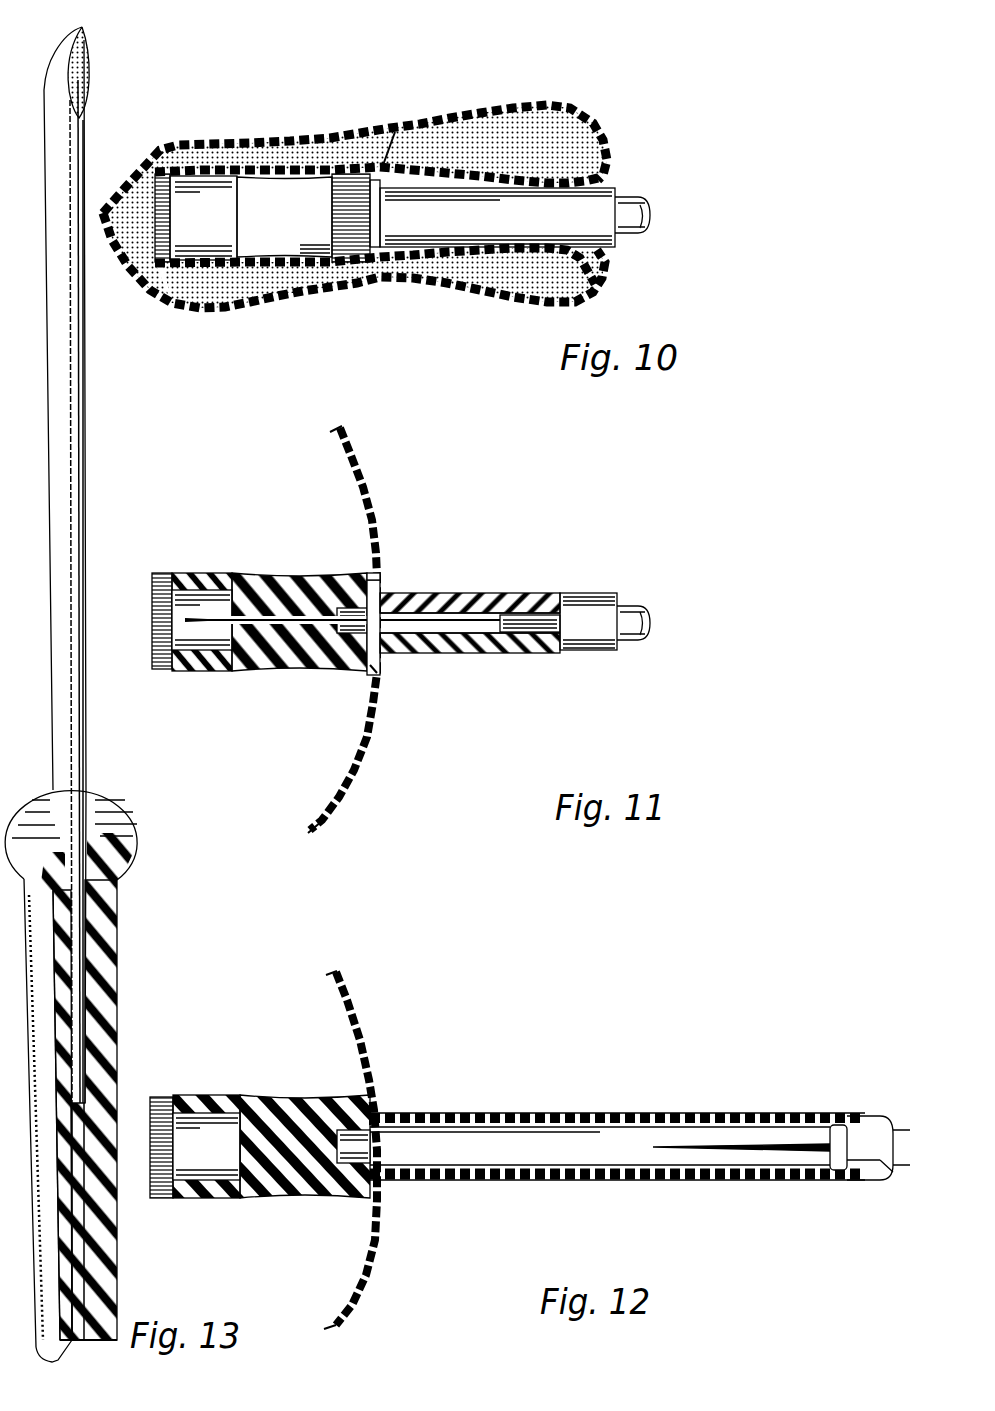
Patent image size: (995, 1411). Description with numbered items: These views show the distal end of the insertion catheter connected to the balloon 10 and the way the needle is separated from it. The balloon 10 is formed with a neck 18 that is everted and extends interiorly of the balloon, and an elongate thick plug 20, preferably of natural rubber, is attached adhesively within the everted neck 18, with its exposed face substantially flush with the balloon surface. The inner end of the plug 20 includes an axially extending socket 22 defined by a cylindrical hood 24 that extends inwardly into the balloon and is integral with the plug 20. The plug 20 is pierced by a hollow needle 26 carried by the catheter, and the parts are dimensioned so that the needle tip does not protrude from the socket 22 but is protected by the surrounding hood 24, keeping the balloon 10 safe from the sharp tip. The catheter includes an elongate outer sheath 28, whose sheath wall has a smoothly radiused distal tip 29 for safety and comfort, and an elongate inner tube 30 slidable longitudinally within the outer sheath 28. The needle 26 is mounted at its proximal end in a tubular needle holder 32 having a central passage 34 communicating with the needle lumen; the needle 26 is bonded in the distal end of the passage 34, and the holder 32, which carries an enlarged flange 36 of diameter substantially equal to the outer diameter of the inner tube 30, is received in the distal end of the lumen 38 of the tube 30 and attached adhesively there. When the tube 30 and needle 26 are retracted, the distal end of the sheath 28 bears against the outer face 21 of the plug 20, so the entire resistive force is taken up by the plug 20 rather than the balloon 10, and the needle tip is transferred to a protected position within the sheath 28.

In FIG. 10, the balloon 10 is at (332, 128).
In FIG. 11, the balloon 10 is at (380, 500).
In FIG. 12, the balloon 10 is at (378, 1033).
In FIG. 10, the neck 18 is at (268, 150).
In FIG. 11, the neck 18 is at (200, 573).
In FIG. 12, the neck 18 is at (273, 1072).
In FIG. 10, the plug 20 is at (288, 243).
In FIG. 11, the plug 20 is at (258, 598).
In FIG. 12, the plug 20 is at (278, 1198).
In FIG. 11, the outer face of the plug 21 is at (381, 586).
In FIG. 11, the socket 22 is at (170, 642).
In FIG. 11, the cylindrical hood 24 is at (172, 573).
In FIG. 11, the hollow needle 26 is at (290, 623).
In FIG. 12, the hollow needle 26 is at (730, 1145).
In FIG. 13, the hollow needle 26 is at (53, 406).
In FIG. 10, the outer sheath 28 is at (608, 186).
In FIG. 11, the outer sheath 28 is at (590, 600).
In FIG. 12, the outer sheath 28 is at (502, 1114).
In FIG. 10, the radiused distal tip of the sheath wall 29 is at (398, 129).
In FIG. 11, the radiused distal tip of the sheath wall 29 is at (381, 669).
In FIG. 12, the radiused distal tip of the sheath wall 29 is at (380, 1107).
In FIG. 10, the inner tube 30 is at (632, 200).
In FIG. 11, the inner tube 30 is at (633, 623).
In FIG. 12, the inner tube 30 is at (836, 1184).
In FIG. 11, the needle holder 32 is at (445, 612).
In FIG. 13, the needle holder 32 is at (105, 985).
In FIG. 13, the central passage 34 is at (75, 1265).
In FIG. 11, the flange 36 is at (383, 658).
In FIG. 12, the flange 36 is at (822, 1135).
In FIG. 13, the flange 36 is at (42, 810).
In FIG. 11, the lumen 38 is at (528, 652).